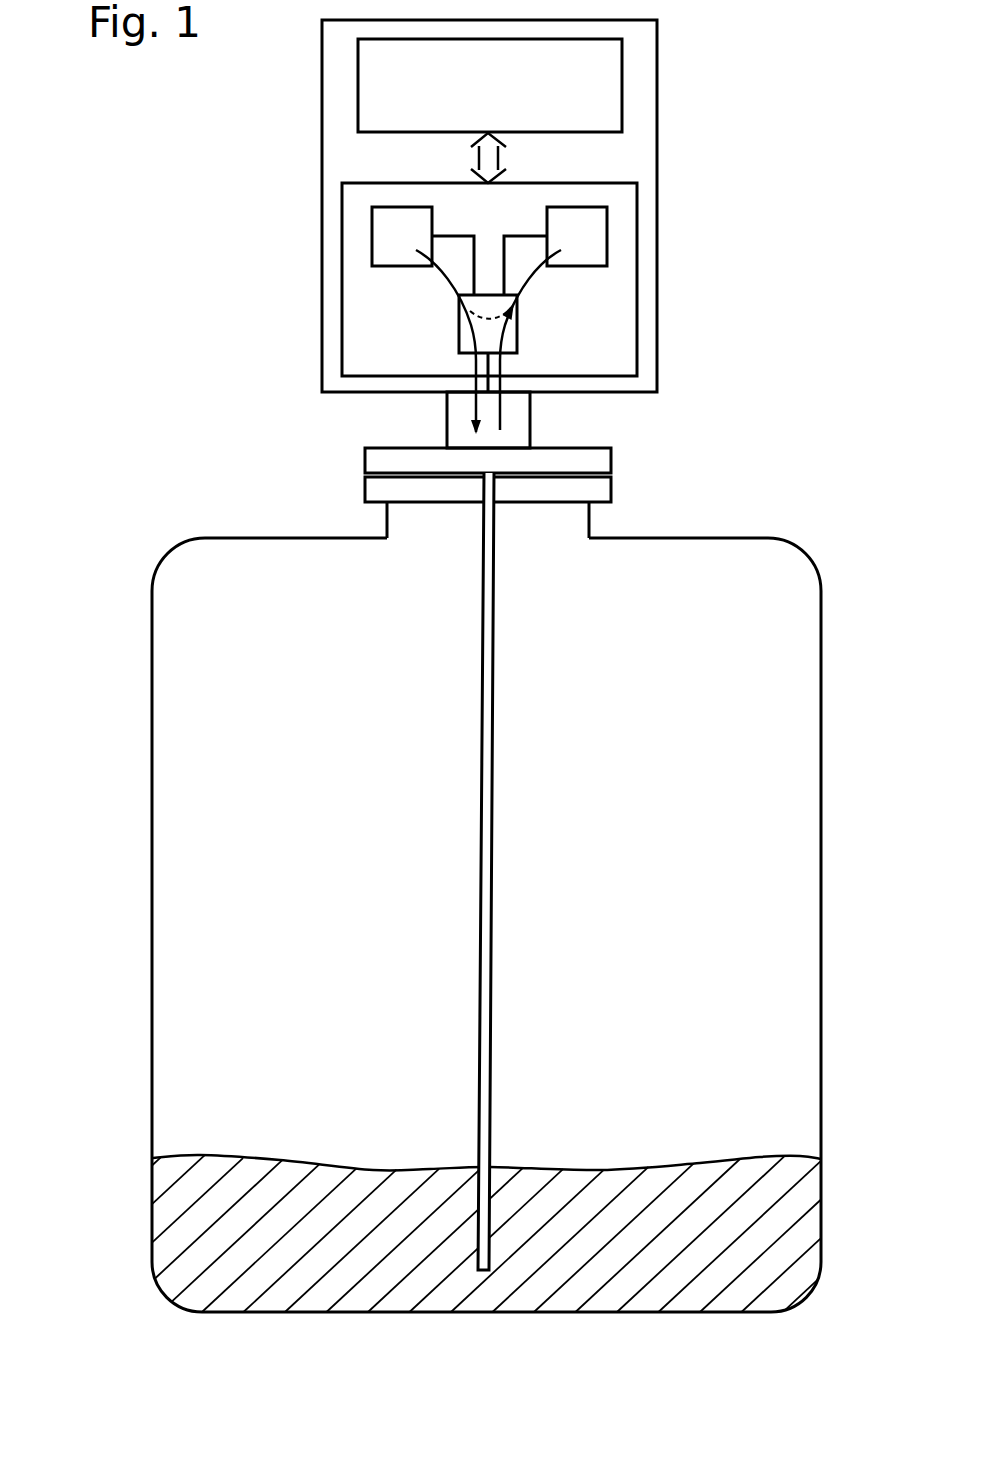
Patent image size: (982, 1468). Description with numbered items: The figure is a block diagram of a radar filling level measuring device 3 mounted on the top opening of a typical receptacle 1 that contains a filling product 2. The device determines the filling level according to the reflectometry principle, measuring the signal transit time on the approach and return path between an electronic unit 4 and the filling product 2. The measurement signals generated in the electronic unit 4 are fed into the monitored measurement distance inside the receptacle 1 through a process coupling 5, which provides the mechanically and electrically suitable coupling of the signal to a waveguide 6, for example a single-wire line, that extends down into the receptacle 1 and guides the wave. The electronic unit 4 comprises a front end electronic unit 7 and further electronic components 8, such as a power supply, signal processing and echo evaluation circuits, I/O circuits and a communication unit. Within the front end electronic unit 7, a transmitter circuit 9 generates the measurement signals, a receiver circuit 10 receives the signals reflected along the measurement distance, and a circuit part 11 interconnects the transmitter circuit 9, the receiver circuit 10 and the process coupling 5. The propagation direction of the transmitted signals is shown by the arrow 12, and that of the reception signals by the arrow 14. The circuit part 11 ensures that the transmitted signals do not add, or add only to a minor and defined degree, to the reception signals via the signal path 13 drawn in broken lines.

The receptacle 1 is at (150, 772).
The filling product 2 is at (390, 1169).
The filling level measuring device 3 is at (663, 425).
The electronic unit 4 is at (659, 81).
The process coupling 5 is at (447, 424).
The waveguide 6 is at (492, 857).
The front end electronic unit 7 is at (340, 348).
The further electronic components 8 is at (357, 87).
The transmitter circuit 9 is at (372, 228).
The receiver circuit 10 is at (607, 227).
The circuit part 11 is at (458, 325).
The arrow 12 is at (455, 290).
The signal path 13 is at (517, 324).
The arrow 14 is at (521, 287).